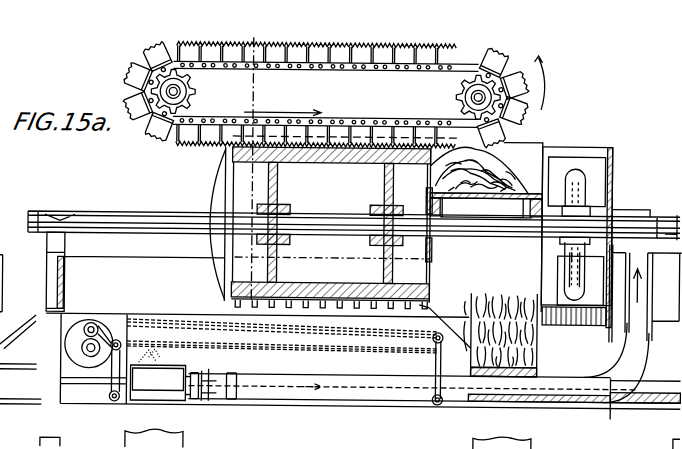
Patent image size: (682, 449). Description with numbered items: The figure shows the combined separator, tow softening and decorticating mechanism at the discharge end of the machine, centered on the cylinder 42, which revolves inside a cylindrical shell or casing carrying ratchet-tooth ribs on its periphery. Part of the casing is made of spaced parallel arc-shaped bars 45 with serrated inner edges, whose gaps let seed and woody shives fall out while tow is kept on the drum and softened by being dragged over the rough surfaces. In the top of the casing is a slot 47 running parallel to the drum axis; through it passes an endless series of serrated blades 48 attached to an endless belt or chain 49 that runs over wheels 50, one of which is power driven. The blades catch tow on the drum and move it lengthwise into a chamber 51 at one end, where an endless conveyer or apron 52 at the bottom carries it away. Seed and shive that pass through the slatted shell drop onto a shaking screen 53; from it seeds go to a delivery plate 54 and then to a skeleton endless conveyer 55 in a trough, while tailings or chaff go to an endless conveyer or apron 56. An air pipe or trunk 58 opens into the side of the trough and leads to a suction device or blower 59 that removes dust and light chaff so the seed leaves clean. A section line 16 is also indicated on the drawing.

The section line / stirrer shaft 16 is at (200, 413).
The cylinder 42 is at (321, 228).
The arc-shaped bars 45 is at (225, 308).
The slot 47 is at (228, 150).
The blades 48 is at (556, 88).
The endless belt or chain 49 is at (347, 71).
The wheels 50 is at (196, 88).
The chamber 51 is at (440, 183).
The endless conveyer or apron 52 is at (525, 366).
The shaking screen 53 is at (340, 331).
The delivery plate 54 is at (328, 352).
The skeleton endless conveyer 55 is at (222, 400).
The endless conveyer or apron 56 is at (152, 396).
The air pipe or trunk 58 is at (620, 410).
The suction device or blower 59 is at (592, 192).